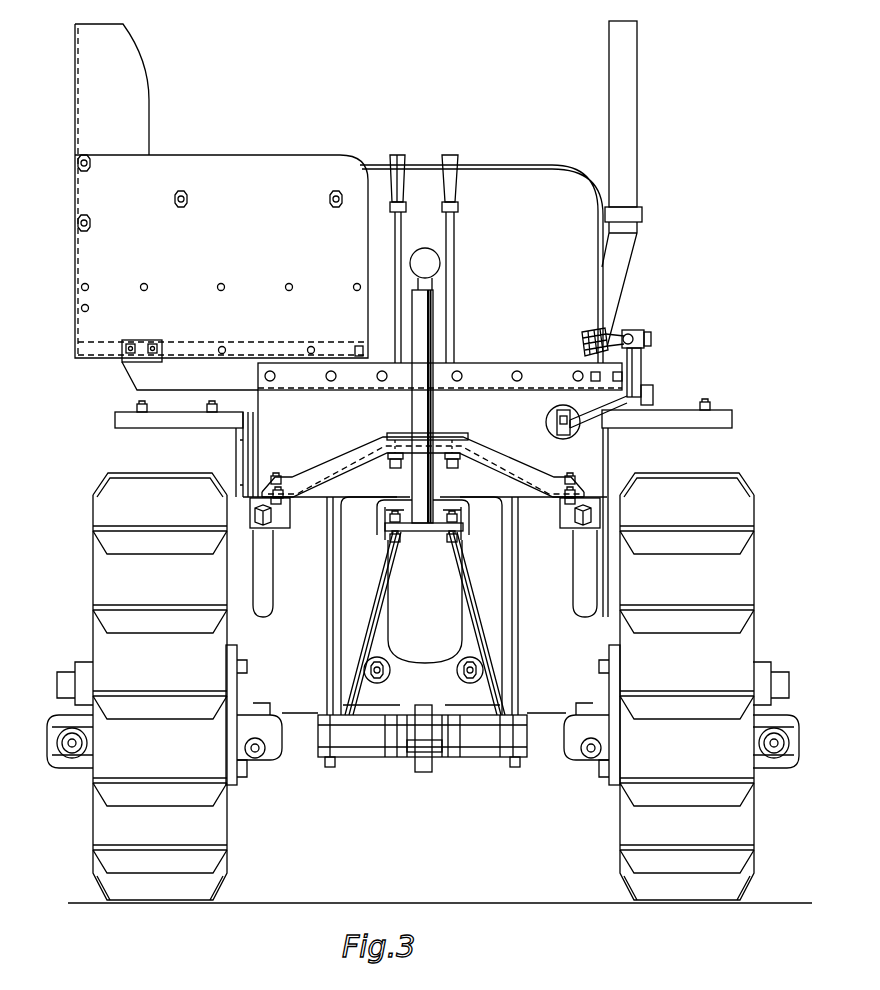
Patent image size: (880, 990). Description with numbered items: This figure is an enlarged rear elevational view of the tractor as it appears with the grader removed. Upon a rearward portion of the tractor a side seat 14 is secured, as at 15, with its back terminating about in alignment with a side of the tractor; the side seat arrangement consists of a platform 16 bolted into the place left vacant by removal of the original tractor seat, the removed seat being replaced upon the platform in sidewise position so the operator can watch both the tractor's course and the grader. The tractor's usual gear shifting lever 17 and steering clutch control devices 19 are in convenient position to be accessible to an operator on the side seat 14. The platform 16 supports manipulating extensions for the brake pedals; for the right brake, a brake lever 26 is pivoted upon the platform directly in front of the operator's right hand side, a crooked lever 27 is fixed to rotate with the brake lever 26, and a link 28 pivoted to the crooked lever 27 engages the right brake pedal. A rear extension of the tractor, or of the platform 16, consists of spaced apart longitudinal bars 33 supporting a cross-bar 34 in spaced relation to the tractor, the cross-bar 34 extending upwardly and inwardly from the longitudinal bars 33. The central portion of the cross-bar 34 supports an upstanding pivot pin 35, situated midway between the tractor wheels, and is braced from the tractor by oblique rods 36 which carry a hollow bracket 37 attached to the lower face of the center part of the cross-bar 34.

The side seat 14 is at (214, 160).
The securing point of side seat 15 is at (138, 356).
The platform 16 is at (535, 363).
The gear shifting lever 17 is at (426, 249).
The steering clutch control devices 19 is at (444, 160).
The brake lever 26 is at (616, 332).
The crooked lever 27 is at (572, 415).
The link 28 is at (555, 430).
The longitudinal bars 33 is at (297, 530).
The cross-bar 34 is at (497, 450).
The upstanding pivot pin 35 is at (435, 308).
The oblique rods 36 is at (470, 594).
The hollow bracket 37 is at (443, 493).